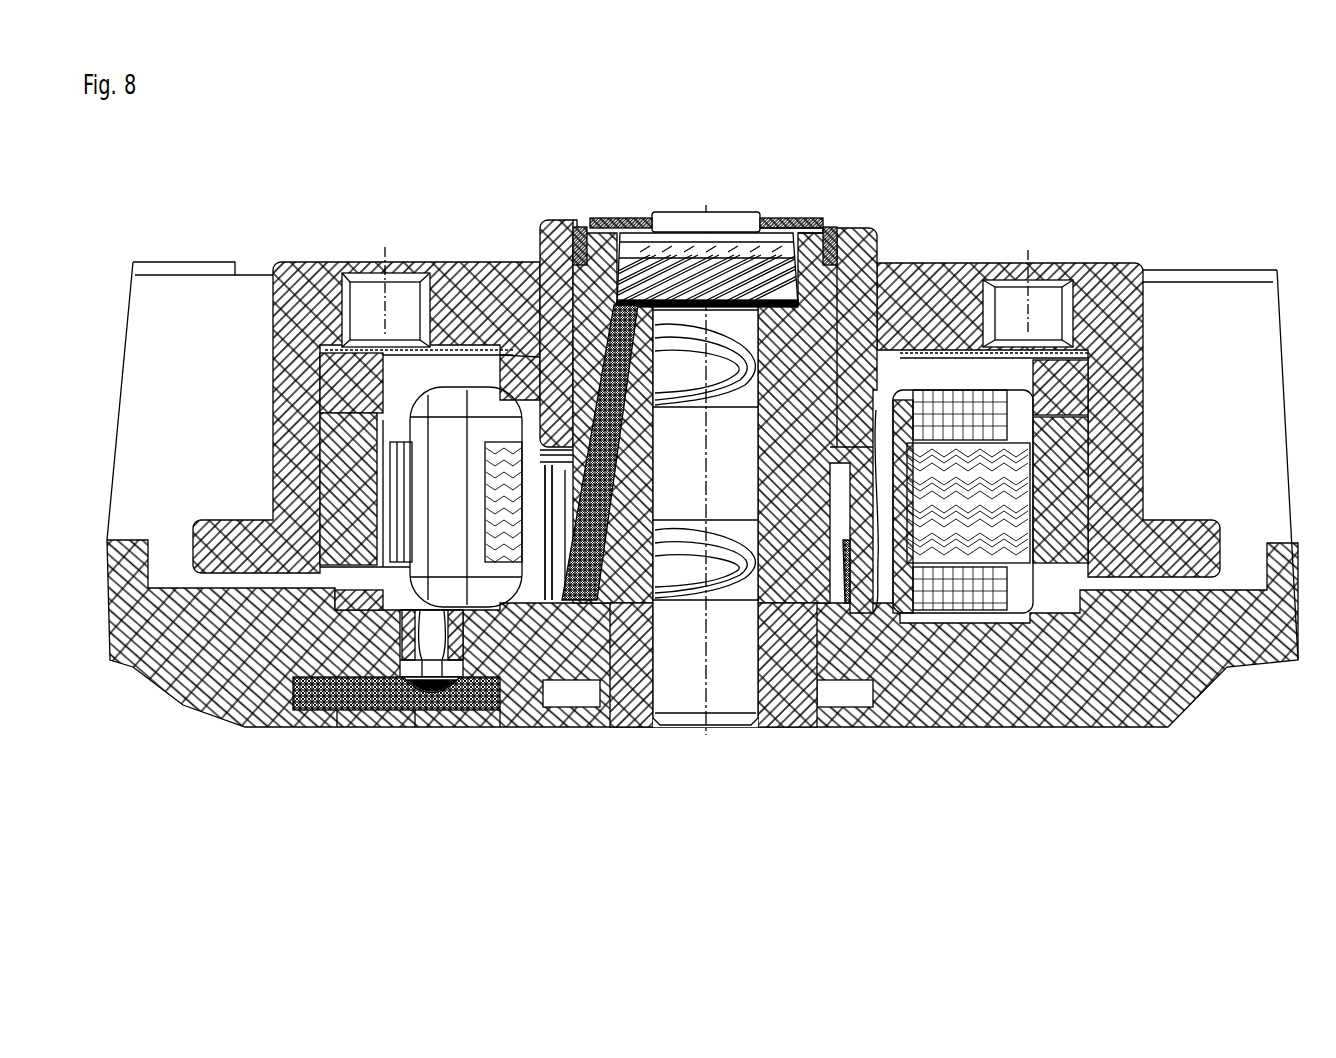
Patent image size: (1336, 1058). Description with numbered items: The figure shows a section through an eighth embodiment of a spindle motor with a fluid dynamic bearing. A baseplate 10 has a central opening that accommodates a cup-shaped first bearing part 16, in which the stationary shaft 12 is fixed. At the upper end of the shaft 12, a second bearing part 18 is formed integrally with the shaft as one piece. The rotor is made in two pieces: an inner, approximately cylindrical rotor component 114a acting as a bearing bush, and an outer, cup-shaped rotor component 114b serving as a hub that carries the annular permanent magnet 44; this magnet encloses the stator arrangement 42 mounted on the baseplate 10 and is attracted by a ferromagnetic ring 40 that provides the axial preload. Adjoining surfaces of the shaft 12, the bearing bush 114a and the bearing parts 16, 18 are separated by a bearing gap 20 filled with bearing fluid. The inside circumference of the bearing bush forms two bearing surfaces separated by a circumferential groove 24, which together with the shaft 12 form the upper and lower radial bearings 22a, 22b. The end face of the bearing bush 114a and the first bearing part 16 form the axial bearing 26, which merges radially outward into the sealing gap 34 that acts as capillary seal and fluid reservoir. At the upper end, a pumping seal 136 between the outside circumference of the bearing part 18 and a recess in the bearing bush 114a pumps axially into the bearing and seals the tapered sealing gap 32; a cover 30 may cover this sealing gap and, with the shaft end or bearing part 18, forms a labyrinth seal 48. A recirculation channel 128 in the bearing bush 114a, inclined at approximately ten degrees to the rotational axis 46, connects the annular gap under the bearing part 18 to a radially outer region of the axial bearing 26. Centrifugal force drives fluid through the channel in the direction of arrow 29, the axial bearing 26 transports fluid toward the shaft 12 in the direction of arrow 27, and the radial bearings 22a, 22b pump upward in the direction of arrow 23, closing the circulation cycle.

The baseplate 10 is at (1093, 707).
The shaft 12 is at (728, 697).
The first bearing part 16 is at (804, 667).
The second bearing part 18 is at (745, 228).
The bearing gap 20 is at (807, 282).
The upper radial bearing 22a is at (682, 310).
The lower radial bearing 22b is at (682, 560).
The arrow 23 is at (655, 600).
The circumferential groove 24 is at (840, 355).
The axial bearing 26 is at (785, 630).
The arrow 27 is at (853, 500).
The arrow 29 is at (600, 343).
The annular cover 30 is at (590, 222).
The sealing gap 32 is at (622, 310).
The sealing gap 34 is at (878, 500).
The ferromagnetic ring 40 is at (382, 615).
The stator arrangement 42 is at (478, 577).
The permanent magnet 44 is at (345, 540).
The rotational axis 46 is at (707, 228).
The labyrinth seal 48 is at (763, 226).
The inner rotor component 114a is at (940, 268).
The outer rotor component 114b is at (1103, 300).
The recirculation channel 128 is at (580, 560).
The pumping seal 136 is at (680, 373).